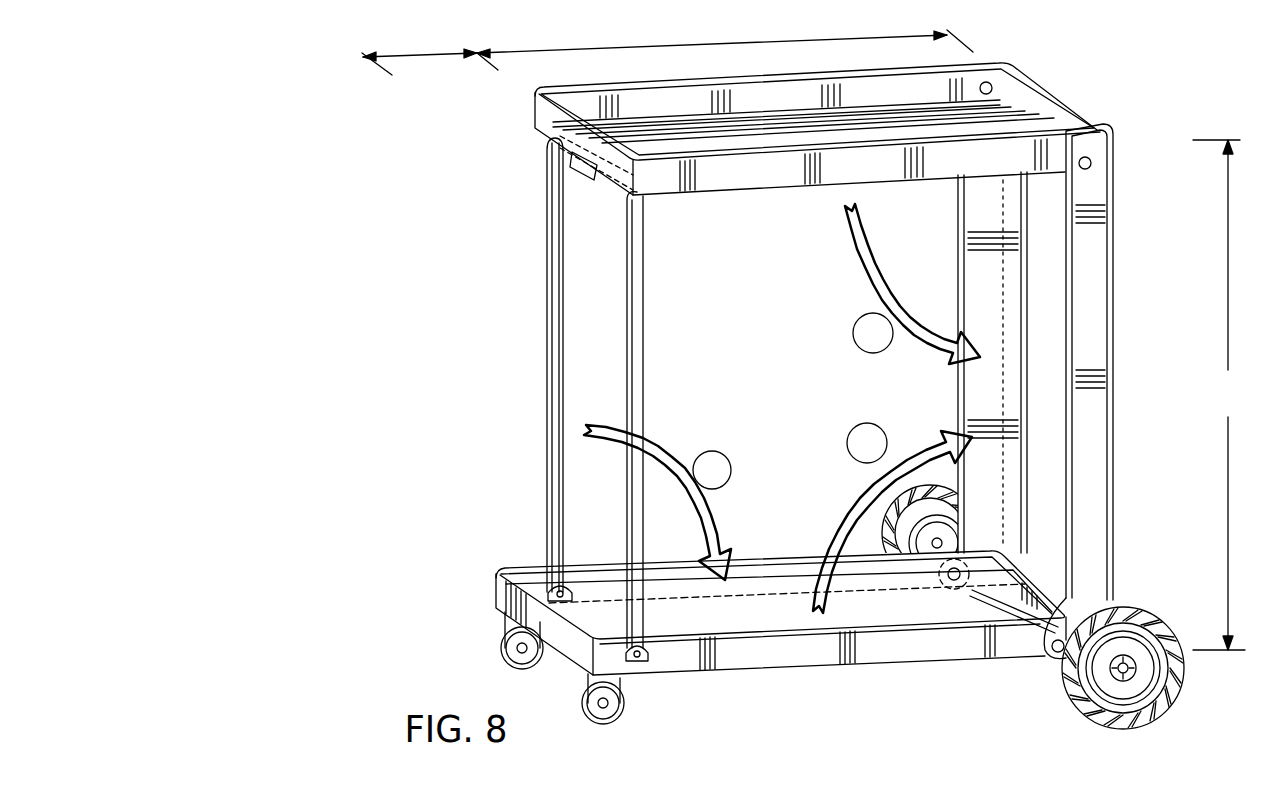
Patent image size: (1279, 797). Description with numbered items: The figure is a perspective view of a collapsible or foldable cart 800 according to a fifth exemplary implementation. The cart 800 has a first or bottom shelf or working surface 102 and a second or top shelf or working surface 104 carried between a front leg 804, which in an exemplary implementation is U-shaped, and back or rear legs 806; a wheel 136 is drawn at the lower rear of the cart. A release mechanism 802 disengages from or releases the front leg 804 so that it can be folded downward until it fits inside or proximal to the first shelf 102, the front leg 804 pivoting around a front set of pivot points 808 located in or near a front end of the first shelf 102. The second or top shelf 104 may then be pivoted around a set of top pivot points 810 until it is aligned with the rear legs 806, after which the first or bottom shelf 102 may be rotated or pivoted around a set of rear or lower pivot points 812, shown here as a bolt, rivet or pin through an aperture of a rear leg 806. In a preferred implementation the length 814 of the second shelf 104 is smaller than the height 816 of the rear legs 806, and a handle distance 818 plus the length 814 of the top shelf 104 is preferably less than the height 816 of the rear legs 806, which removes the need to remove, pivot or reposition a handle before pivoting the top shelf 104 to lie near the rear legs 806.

The collapsible cart 800 is at (458, 285).
The first shelf or working surface 102 is at (754, 612).
The second shelf or working surface 104 is at (732, 130).
The wheel 136 is at (1128, 712).
The release mechanism 802 is at (585, 172).
The front leg 804 is at (555, 380).
The rear leg 806 is at (1092, 292).
The front pivot point 808 is at (557, 590).
The top pivot point 810 is at (993, 88).
The lower pivot point 812 is at (949, 579).
The length of the second shelf 814 is at (725, 37).
The height of the rear legs 816 is at (1222, 395).
The handle distance 818 is at (430, 51).